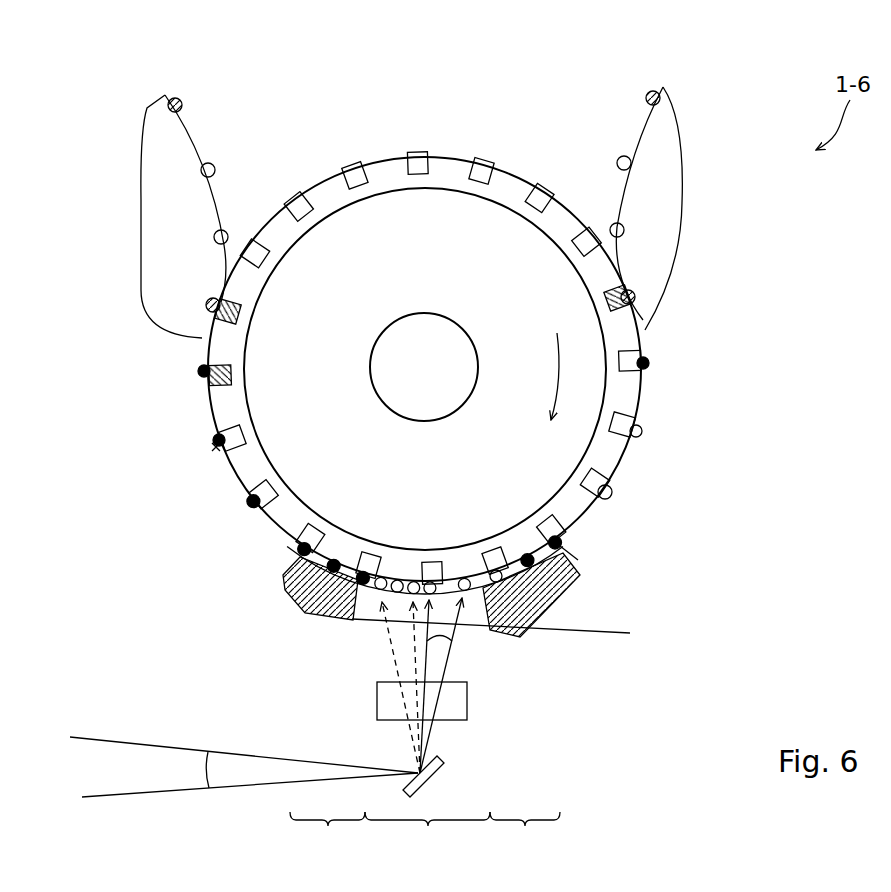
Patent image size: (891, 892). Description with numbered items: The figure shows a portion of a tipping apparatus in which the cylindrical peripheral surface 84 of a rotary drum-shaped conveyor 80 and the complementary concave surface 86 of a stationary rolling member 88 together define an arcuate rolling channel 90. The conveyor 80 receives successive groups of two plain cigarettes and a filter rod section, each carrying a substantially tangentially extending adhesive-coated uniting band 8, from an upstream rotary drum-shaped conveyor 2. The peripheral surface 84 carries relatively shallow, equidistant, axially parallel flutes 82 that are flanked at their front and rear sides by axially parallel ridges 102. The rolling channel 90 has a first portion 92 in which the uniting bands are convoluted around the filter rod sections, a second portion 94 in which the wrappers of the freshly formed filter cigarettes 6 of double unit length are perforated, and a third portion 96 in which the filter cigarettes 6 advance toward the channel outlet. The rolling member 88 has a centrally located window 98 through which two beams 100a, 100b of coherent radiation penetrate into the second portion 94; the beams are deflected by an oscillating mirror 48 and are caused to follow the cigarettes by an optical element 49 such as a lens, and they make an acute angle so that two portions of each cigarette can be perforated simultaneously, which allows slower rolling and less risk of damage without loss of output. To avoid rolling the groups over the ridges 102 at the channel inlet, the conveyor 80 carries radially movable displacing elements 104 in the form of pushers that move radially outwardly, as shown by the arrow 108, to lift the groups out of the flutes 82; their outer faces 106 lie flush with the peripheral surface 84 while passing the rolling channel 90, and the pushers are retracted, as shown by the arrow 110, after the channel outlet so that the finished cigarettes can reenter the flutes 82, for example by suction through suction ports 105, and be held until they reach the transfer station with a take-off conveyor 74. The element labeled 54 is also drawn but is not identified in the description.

The rotary drum-shaped conveyor 2 is at (672, 249).
The filter cigarettes 6 is at (398, 580).
The uniting band 8 is at (656, 86).
The oscillating mirror 48 is at (440, 770).
The optical element 49 is at (467, 718).
The guide element 54 is at (574, 548).
The take-off conveyor 74 is at (180, 147).
The rotary drum-shaped conveyor 80 is at (587, 395).
The flutes 82 is at (540, 190).
The peripheral surface 84 is at (588, 515).
The concave surface 86 is at (480, 608).
The stationary rolling member 88 is at (540, 608).
The arcuate rolling channel 90 is at (298, 600).
The first portion of the rolling channel 92 is at (525, 837).
The second portion of the rolling channel 94 is at (427, 837).
The third portion of the rolling channel 96 is at (327, 837).
The window 98 is at (367, 607).
The beam of coherent radiation 100a is at (153, 797).
The beam of coherent radiation 100b is at (157, 747).
The ridges 102 is at (408, 156).
The displacing elements 104 is at (268, 492).
The suction ports 105 is at (240, 428).
The outer faces of the pushers 106 is at (222, 450).
The arrow indicating outward movement of pushers 108 is at (516, 545).
The arrow indicating retraction of pushers 110 is at (349, 542).